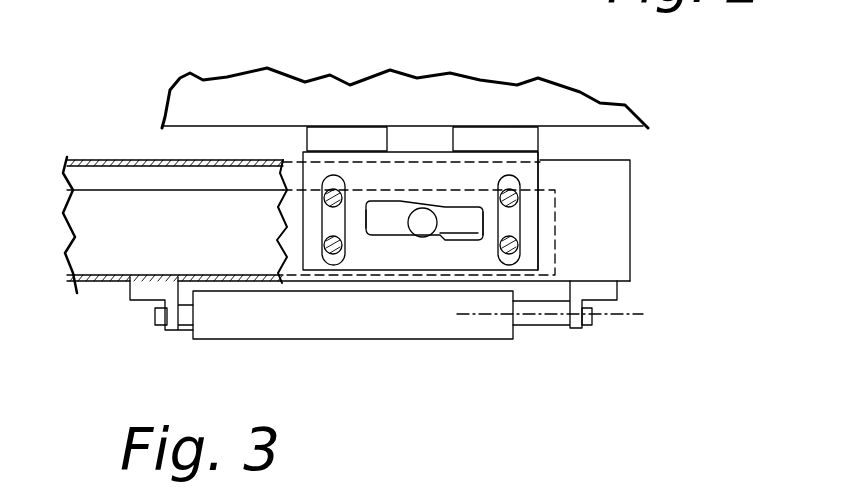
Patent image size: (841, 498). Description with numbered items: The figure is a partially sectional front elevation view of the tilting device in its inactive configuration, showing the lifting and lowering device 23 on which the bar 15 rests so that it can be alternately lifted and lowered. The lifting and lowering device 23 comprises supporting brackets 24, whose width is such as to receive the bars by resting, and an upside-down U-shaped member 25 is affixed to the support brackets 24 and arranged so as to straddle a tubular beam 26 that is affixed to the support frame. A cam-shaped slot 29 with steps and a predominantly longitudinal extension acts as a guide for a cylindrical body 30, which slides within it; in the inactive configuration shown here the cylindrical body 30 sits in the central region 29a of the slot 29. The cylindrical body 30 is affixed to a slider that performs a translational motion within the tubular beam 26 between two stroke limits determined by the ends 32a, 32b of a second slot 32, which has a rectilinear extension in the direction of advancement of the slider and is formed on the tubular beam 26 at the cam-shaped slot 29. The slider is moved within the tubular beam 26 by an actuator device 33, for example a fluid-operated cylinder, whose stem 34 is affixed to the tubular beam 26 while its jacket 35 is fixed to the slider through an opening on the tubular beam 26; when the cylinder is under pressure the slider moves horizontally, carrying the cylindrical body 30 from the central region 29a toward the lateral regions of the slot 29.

The bar 15 is at (400, 100).
The lifting and lowering device 23 is at (613, 147).
The supporting bracket 24 is at (338, 133).
The upside-down U-shaped member 25 is at (293, 160).
The tubular beam 26 is at (133, 160).
The cam-shaped slot 29 is at (465, 245).
The central region of the slot 29a is at (443, 238).
The cylindrical body 30 is at (425, 223).
The second slot 32 is at (388, 204).
The end of second slot 32a is at (362, 210).
The end of second slot 32b is at (483, 222).
The actuator device 33 is at (233, 315).
The stem 34 is at (565, 330).
The jacket 35 is at (402, 340).